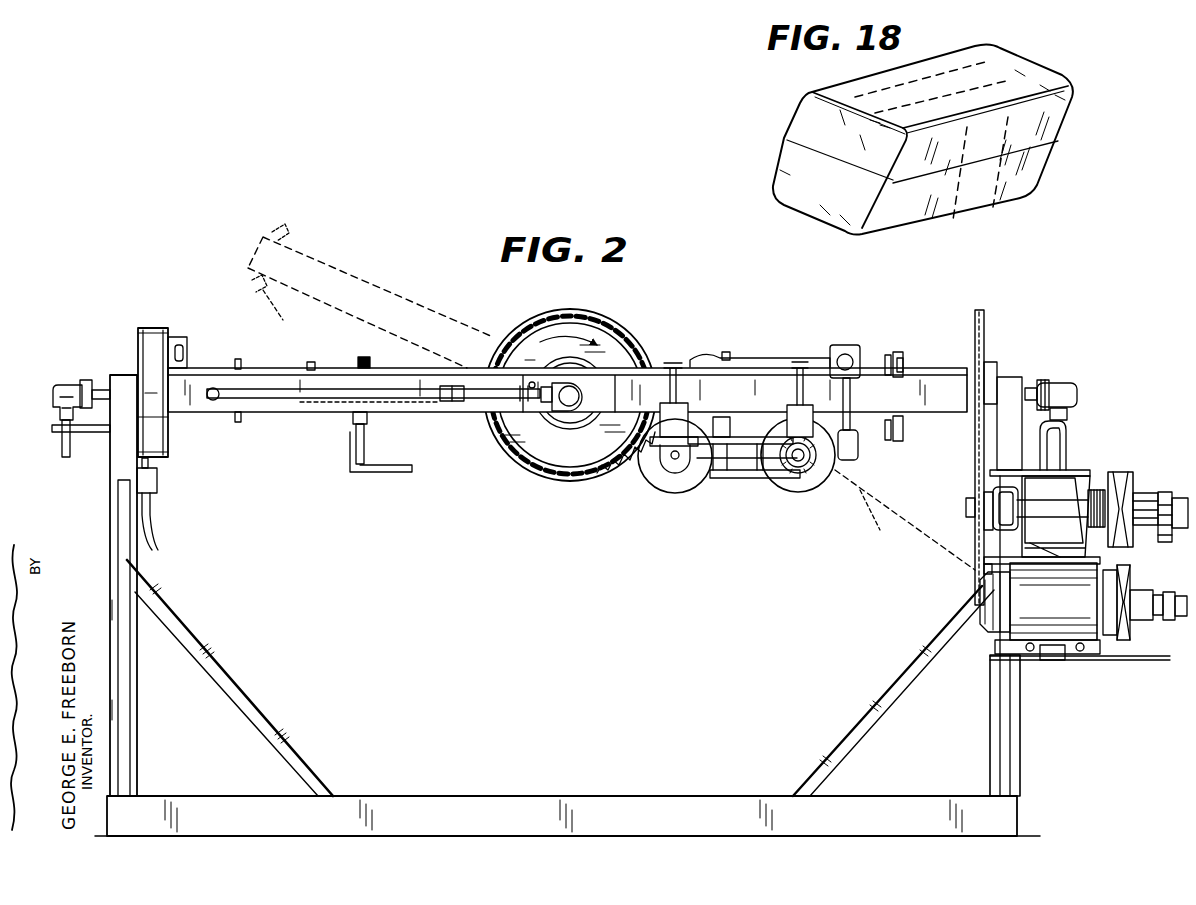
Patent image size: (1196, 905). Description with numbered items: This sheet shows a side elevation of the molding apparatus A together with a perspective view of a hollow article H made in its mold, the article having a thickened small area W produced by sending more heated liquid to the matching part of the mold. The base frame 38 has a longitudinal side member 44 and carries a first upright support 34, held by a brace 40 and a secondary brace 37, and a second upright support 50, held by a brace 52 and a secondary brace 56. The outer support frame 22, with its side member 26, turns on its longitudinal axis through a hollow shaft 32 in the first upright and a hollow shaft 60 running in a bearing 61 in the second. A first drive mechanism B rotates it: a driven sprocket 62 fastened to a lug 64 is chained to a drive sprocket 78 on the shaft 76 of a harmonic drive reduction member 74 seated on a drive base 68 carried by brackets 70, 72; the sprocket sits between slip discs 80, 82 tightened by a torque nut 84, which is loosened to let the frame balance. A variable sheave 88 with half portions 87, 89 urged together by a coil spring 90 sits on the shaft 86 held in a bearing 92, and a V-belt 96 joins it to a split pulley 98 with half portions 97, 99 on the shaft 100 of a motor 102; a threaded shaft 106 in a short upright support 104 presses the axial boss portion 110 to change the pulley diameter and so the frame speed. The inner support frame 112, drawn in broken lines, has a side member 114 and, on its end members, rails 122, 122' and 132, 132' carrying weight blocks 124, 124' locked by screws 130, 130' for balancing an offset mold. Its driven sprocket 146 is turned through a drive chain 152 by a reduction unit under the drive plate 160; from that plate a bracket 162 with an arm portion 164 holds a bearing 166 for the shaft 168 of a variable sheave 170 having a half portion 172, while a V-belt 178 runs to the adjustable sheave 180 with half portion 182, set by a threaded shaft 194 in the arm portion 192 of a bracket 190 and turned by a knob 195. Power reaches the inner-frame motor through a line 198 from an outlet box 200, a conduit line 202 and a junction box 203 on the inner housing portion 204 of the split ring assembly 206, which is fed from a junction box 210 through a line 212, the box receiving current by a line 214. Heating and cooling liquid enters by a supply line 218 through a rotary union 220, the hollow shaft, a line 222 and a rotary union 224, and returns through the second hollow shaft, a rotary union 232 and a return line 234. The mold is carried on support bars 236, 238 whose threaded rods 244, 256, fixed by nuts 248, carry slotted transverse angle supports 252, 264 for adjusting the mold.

In FIG. 2, the piston rod 22 is at (332, 412).
In FIG. 2, the beam 26 is at (300, 412).
In FIG. 2, the post 32 is at (105, 385).
In FIG. 2, the upright 34 is at (110, 522).
In FIG. 2, the brace 37 is at (262, 722).
In FIG. 2, the base 38 is at (533, 795).
In FIG. 2, the channel 40 is at (118, 500).
In FIG. 2, the base member 44 is at (606, 802).
In FIG. 2, the upright frame 50 is at (990, 740).
In FIG. 2, the flange 52 is at (1000, 726).
In FIG. 2, the brace 56 is at (862, 718).
In FIG. 2, the block 60 is at (1032, 388).
In FIG. 2, the plate 61 is at (993, 362).
In FIG. 2, the vertical plate 62 is at (985, 330).
In FIG. 2, the beam end 64 is at (972, 395).
In FIG. 2, the pulley 68 is at (1095, 490).
In FIG. 2, the shaft 70 is at (1182, 620).
In FIG. 2, the shaft 72 is at (1160, 506).
In FIG. 2, the bearing housing 74 is at (1060, 485).
In FIG. 2, the base plate 76 is at (984, 540).
In FIG. 2, the web 78 is at (980, 550).
In FIG. 2, the flange 80 is at (984, 492).
In FIG. 2, the bearing 82 is at (996, 488).
In FIG. 2, the nut 84 is at (966, 511).
In FIG. 2, the shaft 86 is at (1088, 512).
In FIG. 2, the pulley flange 87 is at (1127, 478).
In FIG. 2, the pulley 88 is at (1134, 488).
In FIG. 2, the pulley groove 89 is at (1131, 485).
In FIG. 2, the belt 90 is at (1102, 492).
In FIG. 2, the coupling 92 is at (1172, 513).
In FIG. 2, the motor pulley 96 is at (1118, 560).
In FIG. 2, the motor base 97 is at (1100, 642).
In FIG. 2, the pulley 98 is at (1135, 575).
In FIG. 2, the bolt 99 is at (1122, 642).
In FIG. 2, the motor 100 is at (1092, 603).
In FIG. 2, the motor mount 102 is at (1025, 625).
In FIG. 2, the bearing 104 is at (1183, 524).
In FIG. 2, the coupling 106 is at (1176, 600).
In FIG. 2, the shaft 110 is at (1160, 620).
In FIG. 2, the arm position 112 is at (374, 282).
In FIG. 2, the arm position 114 is at (446, 320).
In FIG. 2, the clamp 122 is at (889, 463).
In FIG. 2, the clamp 122' is at (910, 447).
In FIG. 2, the clamp block 124 is at (850, 460).
In FIG. 2, the clamp block 124' is at (932, 440).
In FIG. 2, the clamp bolt 130 is at (878, 457).
In FIG. 2, the clamp bolt 130' is at (909, 483).
In FIG. 2, the arm 132 is at (364, 279).
In FIG. 2, the arm bolt 132' is at (278, 372).
In FIG. 2, the ring gear 146 is at (594, 324).
In FIG. 2, the rotation arrow 152 is at (637, 343).
In FIG. 2, the carriage 160 is at (700, 405).
In FIG. 2, the housing 162 is at (660, 410).
In FIG. 2, the spring 164 is at (650, 436).
In FIG. 2, the wheel 166 is at (672, 462).
In FIG. 2, the yoke 168 is at (660, 490).
In FIG. 2, the axle 170 is at (674, 494).
In FIG. 2, the bracket 172 is at (650, 470).
In FIG. 2, the frame bar 178 is at (750, 478).
In FIG. 2, the wheel 180 is at (796, 494).
In FIG. 2, the frame bar 182 is at (790, 470).
In FIG. 2, the column 190 is at (790, 412).
In FIG. 2, the frame 192 is at (720, 478).
In FIG. 2, the gear 194 is at (812, 468).
In FIG. 2, the hub 195 is at (822, 448).
In FIG. 2, the rod 198 is at (875, 395).
In FIG. 2, the gearbox 200 is at (840, 352).
In FIG. 2, the hub 202 is at (462, 366).
In FIG. 2, the plate 203 is at (186, 352).
In FIG. 2, the plate 204 is at (180, 338).
In FIG. 2, the cylinder 206 is at (160, 325).
In FIG. 2, the fitting 210 is at (158, 487).
In FIG. 2, the fitting 212 is at (150, 463).
In FIG. 2, the hose 214 is at (156, 530).
In FIG. 2, the valve stem 218 is at (62, 451).
In FIG. 2, the valve 220 is at (62, 385).
In FIG. 2, the rod 222 is at (425, 410).
In FIG. 2, the rod end 224 is at (567, 404).
In FIG. 2, the valve 232 is at (1076, 392).
In FIG. 2, the pipe 234 is at (1066, 440).
In FIG. 2, the fitting 236 is at (358, 430).
In FIG. 2, the bar 238 is at (727, 418).
In FIG. 2, the fitting 244 is at (363, 357).
In FIG. 2, the bracket 248 is at (385, 440).
In FIG. 2, the bracket arm 252 is at (395, 475).
In FIG. 2, the rail 256 is at (727, 355).
In FIG. 2, the axle 264 is at (700, 482).
In FIG. 2, the direction arrow A is at (433, 298).
In FIG. 2, the direction arrow B is at (1092, 680).
In FIG. 18, the height H is at (1068, 74).
In FIG. 18, the width W is at (958, 190).